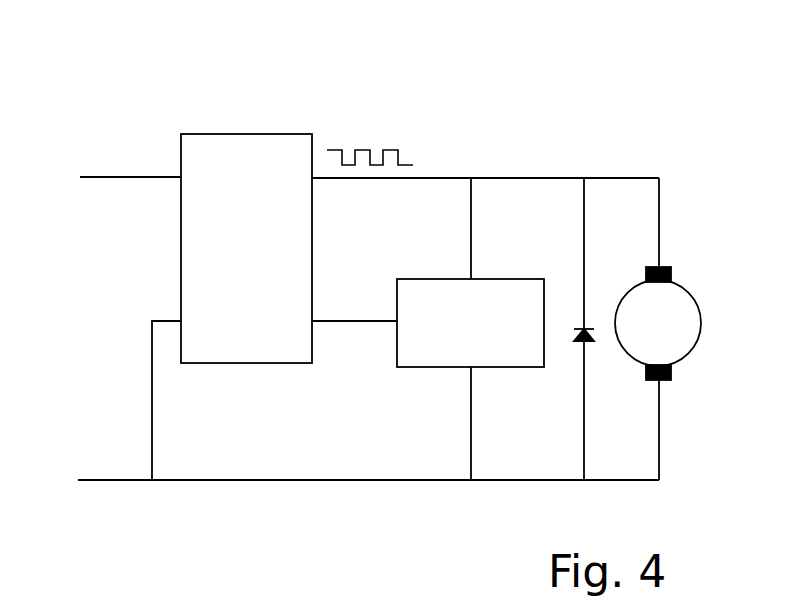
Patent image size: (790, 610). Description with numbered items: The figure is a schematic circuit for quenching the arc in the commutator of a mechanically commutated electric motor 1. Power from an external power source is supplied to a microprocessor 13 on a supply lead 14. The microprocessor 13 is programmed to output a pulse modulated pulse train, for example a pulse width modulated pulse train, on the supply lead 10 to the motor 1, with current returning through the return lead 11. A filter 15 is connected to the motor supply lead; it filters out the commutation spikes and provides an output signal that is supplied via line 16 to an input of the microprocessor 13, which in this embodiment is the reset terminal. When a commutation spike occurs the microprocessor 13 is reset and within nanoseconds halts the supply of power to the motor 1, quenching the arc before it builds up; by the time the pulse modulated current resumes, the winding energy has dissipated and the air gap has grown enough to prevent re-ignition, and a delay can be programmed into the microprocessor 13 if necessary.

The mechanically commutated electric motor 1 is at (678, 282).
The supply lead 10 is at (602, 178).
The return lead 11 is at (242, 482).
The microprocessor 13 is at (255, 133).
The supply lead 14 is at (155, 177).
The filter 15 is at (462, 279).
The line 16 is at (348, 323).